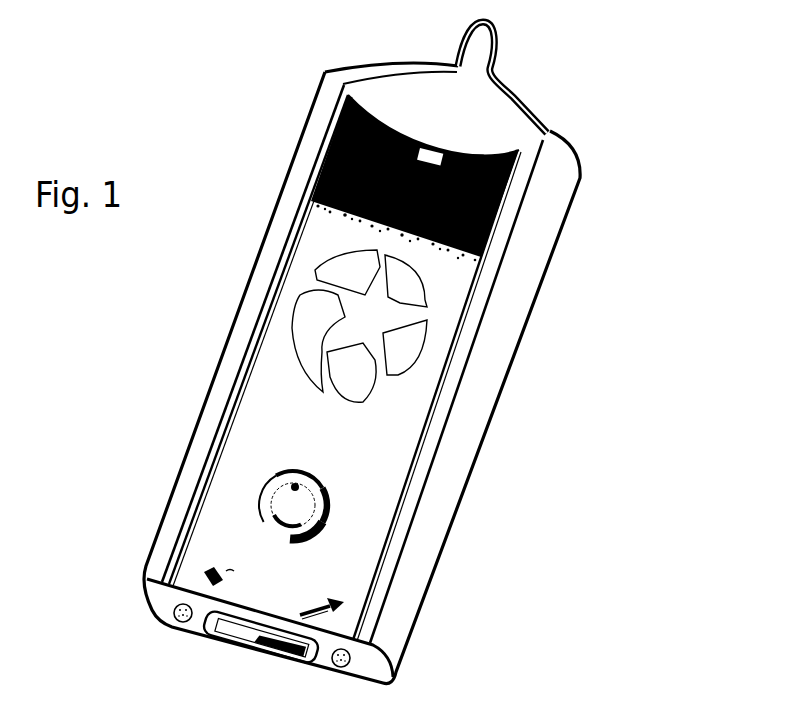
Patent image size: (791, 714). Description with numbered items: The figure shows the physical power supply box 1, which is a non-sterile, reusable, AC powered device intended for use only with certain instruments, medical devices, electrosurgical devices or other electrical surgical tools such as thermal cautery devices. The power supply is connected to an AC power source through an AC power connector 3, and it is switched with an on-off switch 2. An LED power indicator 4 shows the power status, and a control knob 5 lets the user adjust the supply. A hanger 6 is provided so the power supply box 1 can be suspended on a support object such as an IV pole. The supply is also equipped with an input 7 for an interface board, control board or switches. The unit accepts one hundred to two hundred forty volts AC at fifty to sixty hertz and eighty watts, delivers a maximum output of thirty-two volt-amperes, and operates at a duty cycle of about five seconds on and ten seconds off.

The power supply box 1 is at (634, 365).
The on-off switch 2 is at (273, 657).
The AC power connector 3 is at (230, 645).
The LED power indicator 4 is at (297, 508).
The control knob 5 is at (527, 97).
The hanger 6 is at (183, 618).
The input 7 is at (373, 674).